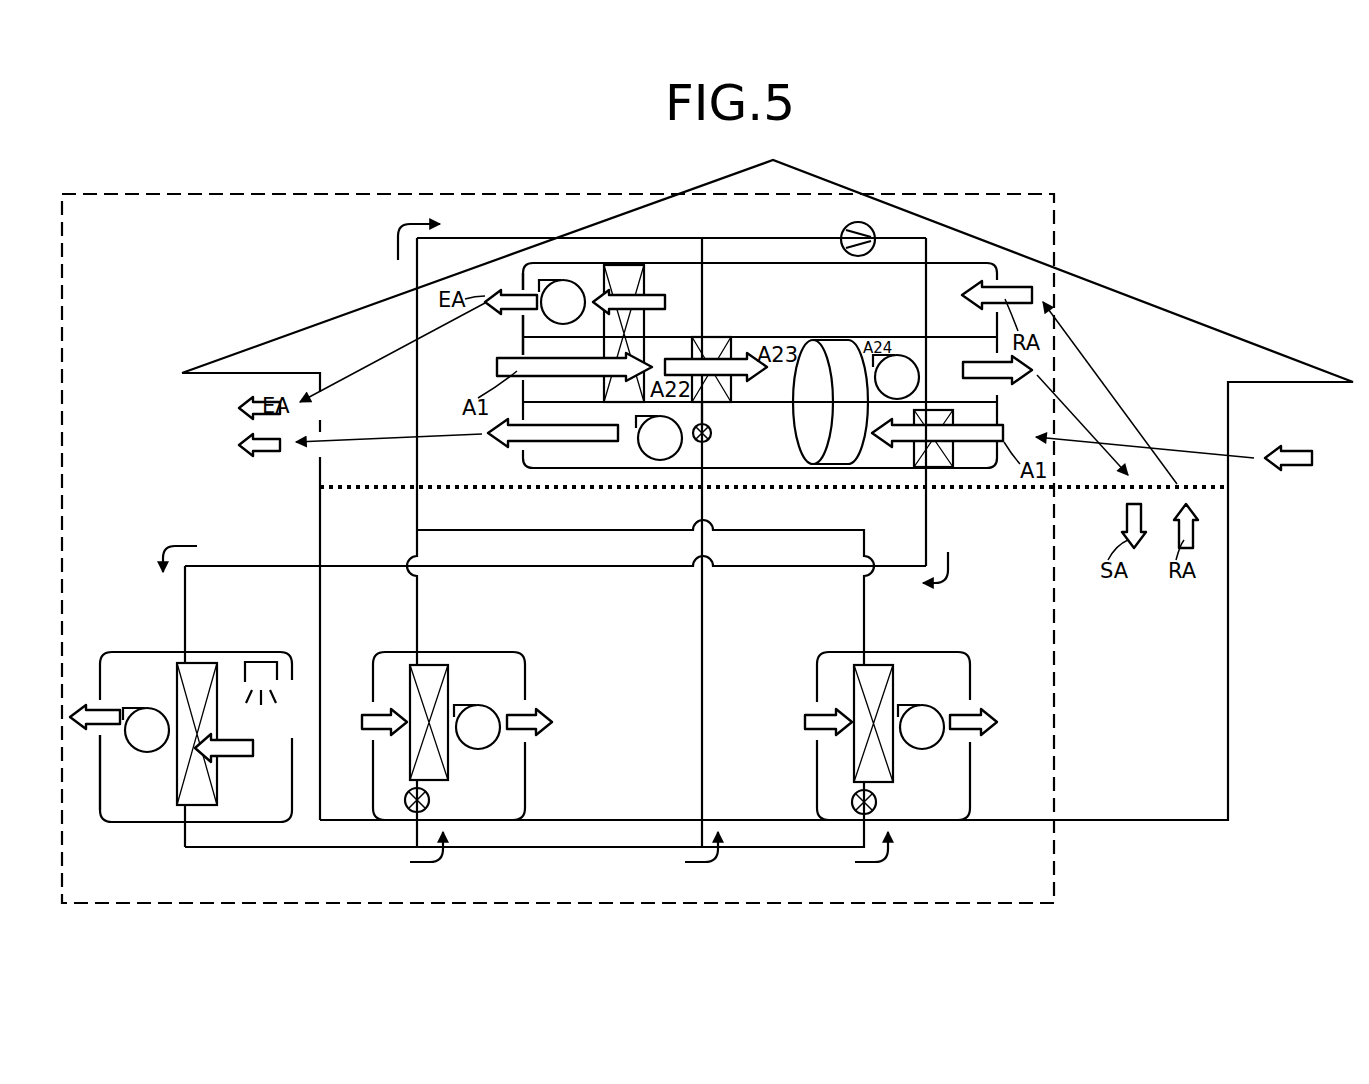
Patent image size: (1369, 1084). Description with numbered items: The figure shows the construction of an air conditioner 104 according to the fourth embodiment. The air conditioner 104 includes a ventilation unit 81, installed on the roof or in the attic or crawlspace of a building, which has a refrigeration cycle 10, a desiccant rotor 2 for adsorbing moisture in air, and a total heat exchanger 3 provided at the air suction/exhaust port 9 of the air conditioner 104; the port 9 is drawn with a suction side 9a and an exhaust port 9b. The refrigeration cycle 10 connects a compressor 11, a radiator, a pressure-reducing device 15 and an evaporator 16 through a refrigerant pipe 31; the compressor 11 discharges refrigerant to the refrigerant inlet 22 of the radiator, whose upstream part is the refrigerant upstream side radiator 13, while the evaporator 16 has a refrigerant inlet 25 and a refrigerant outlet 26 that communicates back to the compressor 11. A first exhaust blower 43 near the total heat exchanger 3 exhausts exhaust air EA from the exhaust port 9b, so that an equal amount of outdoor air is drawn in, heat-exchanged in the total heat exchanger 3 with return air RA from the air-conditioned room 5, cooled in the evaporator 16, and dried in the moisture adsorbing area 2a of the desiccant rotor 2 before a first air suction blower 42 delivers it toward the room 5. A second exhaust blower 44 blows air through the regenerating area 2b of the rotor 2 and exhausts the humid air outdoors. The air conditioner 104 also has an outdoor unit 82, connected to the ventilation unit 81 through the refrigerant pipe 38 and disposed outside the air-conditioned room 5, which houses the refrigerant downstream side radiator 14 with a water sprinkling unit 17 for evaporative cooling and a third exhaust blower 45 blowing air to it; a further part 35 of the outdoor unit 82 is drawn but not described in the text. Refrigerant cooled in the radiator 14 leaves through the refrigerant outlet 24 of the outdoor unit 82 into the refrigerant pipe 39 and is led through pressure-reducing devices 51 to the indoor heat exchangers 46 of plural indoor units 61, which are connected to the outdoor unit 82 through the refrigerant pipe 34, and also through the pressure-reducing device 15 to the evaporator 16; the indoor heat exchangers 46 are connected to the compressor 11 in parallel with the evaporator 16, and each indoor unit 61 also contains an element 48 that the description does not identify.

The air conditioner 104 is at (352, 193).
The air-conditioned room 5 is at (677, 614).
The refrigeration cycle 10 is at (758, 237).
The compressor 11 is at (847, 225).
The ventilation unit 81 is at (918, 287).
The refrigerant pipe 34 is at (540, 456).
The first exhaust blower 43 is at (568, 288).
The total heat exchanger 3 is at (636, 268).
The refrigerant outlet 26 is at (697, 335).
The evaporator 16 is at (728, 336).
The desiccant rotor 2 is at (828, 344).
The moisture adsorbing area 2a is at (806, 380).
The regenerating area 2b is at (806, 440).
The first air suction blower 42 is at (916, 373).
The refrigerant inlet 22 is at (930, 409).
The refrigerant upstream side radiator 13 is at (950, 455).
The refrigerant inlet 25 is at (707, 406).
The pressure-reducing device 15 is at (712, 437).
The second exhaust blower 44 is at (641, 447).
The air suction/exhaust port 9 is at (448, 337).
The intake opening 9a is at (500, 361).
The exhaust port 9b is at (520, 313).
The refrigerant pipe 31 is at (928, 532).
The refrigerant pipe 38 is at (240, 565).
The refrigerant pipe 39 is at (264, 849).
The refrigerant outlet 24 is at (182, 806).
The outdoor unit 82 is at (118, 651).
The humidification unit casing 35 is at (117, 753).
The refrigerant downstream side radiator 14 is at (204, 662).
The water sprinkling unit 17 is at (270, 660).
The third exhaust blower 45 is at (140, 715).
The indoor unit 61 is at (528, 790).
The indoor heat exchanger 46 is at (428, 672).
The indoor fan 48 is at (482, 712).
The pressure-reducing device 51 is at (432, 800).